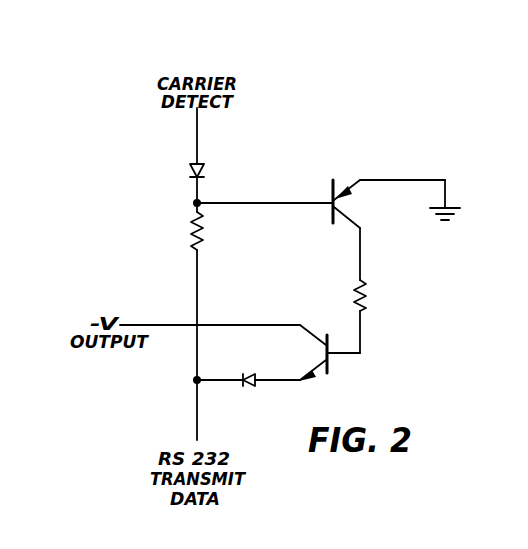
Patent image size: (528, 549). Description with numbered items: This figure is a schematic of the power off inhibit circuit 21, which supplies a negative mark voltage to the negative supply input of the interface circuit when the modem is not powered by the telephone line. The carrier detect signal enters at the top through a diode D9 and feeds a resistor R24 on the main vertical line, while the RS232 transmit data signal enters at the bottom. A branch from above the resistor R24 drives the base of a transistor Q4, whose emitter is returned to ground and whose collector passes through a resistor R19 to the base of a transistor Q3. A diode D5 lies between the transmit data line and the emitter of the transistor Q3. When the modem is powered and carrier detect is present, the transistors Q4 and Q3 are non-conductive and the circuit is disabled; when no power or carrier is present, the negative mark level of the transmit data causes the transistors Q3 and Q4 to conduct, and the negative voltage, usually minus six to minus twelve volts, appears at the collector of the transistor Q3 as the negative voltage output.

The power off inhibit circuit 21 is at (162, 268).
The diode D9 is at (181, 174).
The resistor R24 is at (219, 231).
The transistor Q4 is at (389, 230).
The resistor R19 is at (369, 316).
The transistor Q3 is at (302, 353).
The diode D5 is at (246, 394).